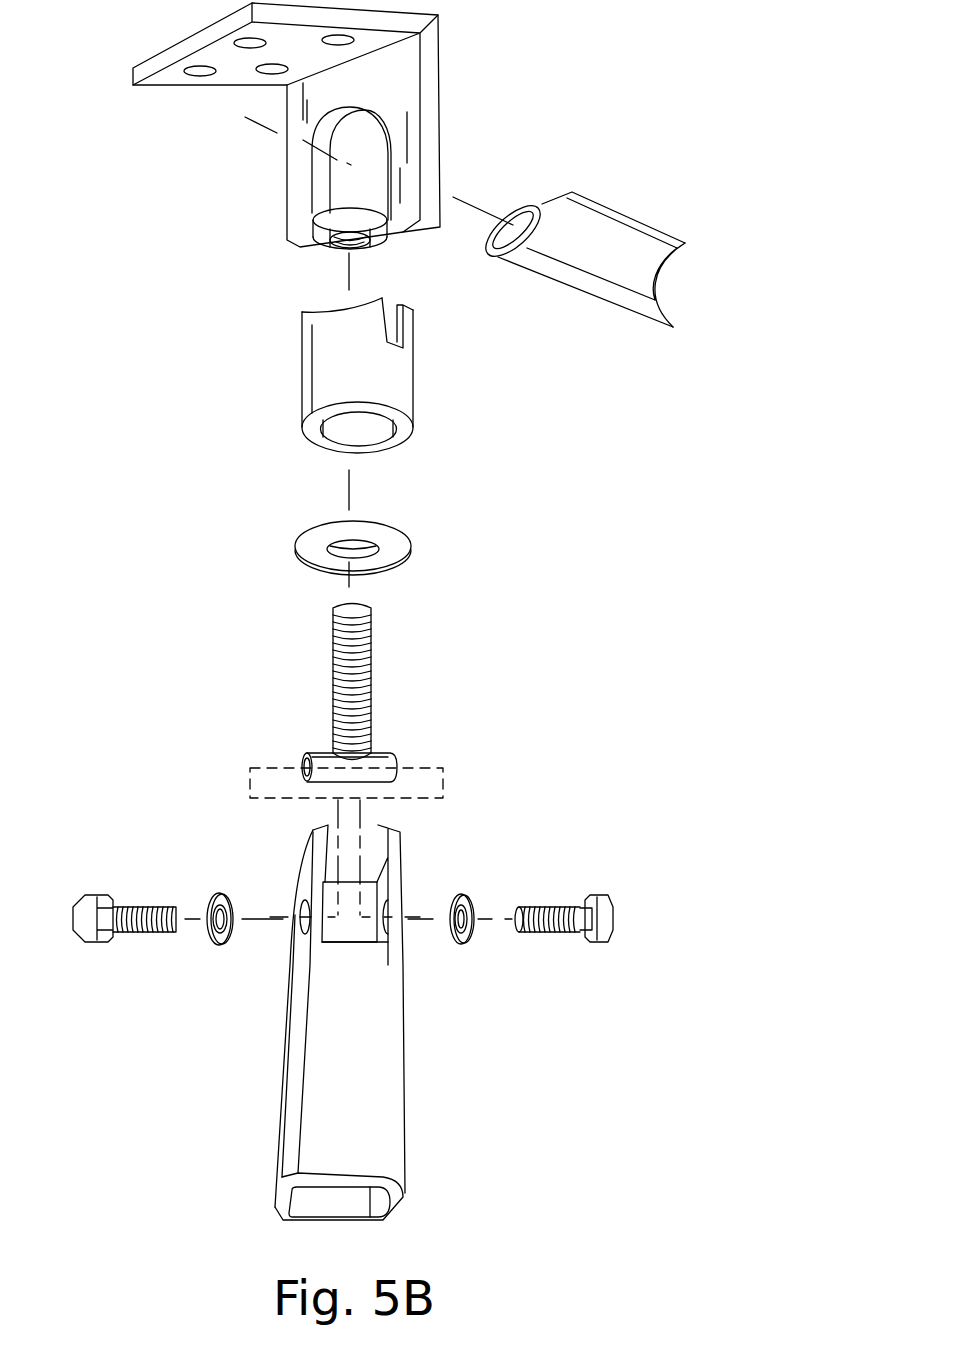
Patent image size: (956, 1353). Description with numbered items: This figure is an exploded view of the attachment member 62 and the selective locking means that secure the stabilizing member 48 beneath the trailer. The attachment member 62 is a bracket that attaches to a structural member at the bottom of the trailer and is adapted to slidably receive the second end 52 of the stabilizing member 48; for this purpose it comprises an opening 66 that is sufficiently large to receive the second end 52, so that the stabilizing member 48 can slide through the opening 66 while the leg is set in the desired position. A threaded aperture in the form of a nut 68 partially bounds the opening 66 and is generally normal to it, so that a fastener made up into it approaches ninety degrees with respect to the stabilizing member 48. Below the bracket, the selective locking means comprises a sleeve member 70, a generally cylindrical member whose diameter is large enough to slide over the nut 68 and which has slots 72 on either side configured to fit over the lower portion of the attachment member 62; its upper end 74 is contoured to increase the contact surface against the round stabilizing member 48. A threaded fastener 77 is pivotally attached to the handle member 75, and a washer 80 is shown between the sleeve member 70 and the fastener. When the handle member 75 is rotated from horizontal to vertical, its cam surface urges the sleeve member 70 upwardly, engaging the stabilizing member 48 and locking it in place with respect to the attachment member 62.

The attachment member 62 is at (430, 80).
The opening 66 is at (367, 172).
The nut 68 is at (378, 250).
The stabilizing member 48 is at (620, 218).
The second end 52 is at (560, 210).
The sleeve member 70 is at (413, 417).
The slots 72 is at (390, 327).
The upper end 74 is at (323, 313).
The washer 80 is at (410, 540).
The threaded fastener 77 is at (372, 692).
The handle member 75 is at (403, 1075).